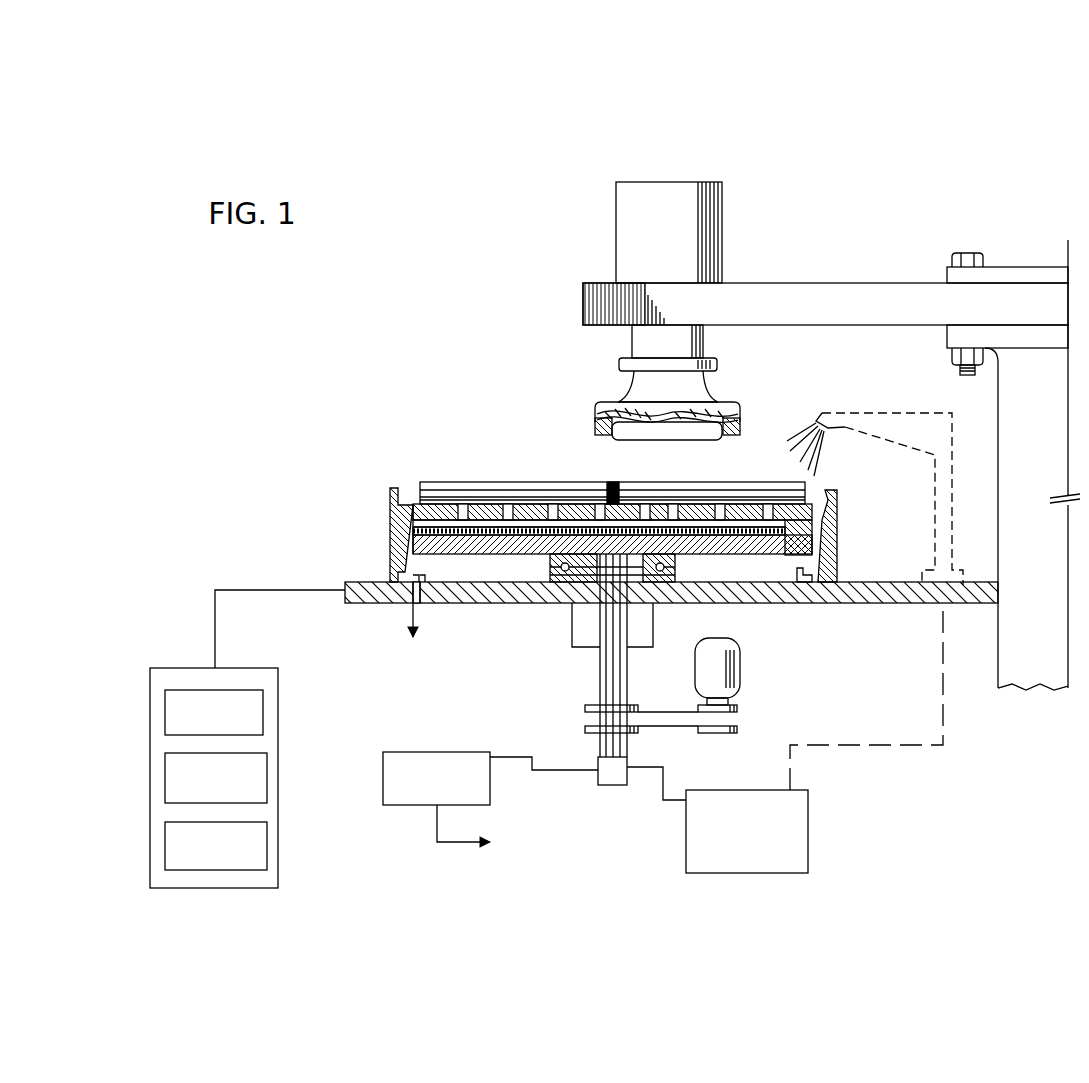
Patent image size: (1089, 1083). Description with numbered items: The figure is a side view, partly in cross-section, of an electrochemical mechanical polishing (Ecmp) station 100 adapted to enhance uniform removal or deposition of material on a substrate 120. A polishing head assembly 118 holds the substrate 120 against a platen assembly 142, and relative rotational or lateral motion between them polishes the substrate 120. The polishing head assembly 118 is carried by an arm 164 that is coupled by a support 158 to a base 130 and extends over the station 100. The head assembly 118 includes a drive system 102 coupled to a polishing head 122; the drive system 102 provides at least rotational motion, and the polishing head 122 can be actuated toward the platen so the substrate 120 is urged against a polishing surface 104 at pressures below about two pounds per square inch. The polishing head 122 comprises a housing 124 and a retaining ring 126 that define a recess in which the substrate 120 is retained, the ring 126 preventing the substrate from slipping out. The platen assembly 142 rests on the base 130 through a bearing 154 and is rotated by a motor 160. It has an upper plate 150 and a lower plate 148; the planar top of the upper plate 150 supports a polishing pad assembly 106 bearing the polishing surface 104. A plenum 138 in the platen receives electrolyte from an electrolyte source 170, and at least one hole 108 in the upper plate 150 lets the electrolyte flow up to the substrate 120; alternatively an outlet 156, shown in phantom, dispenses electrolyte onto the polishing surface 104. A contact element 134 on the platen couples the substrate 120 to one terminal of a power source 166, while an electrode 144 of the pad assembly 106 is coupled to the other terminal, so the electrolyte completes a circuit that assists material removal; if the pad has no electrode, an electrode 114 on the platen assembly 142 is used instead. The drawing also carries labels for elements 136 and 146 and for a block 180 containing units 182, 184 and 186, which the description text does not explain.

The Ecmp station 100 is at (410, 301).
The drive system 102 is at (616, 232).
The polishing surface 104 is at (490, 482).
The polishing pad assembly 106 is at (575, 479).
The hole 108 is at (455, 504).
The electrode 114 is at (437, 527).
The polishing head assembly 118 is at (598, 338).
The substrate 120 is at (631, 427).
The polishing head 122 is at (731, 402).
The housing 124 is at (742, 412).
The retaining ring 126 is at (738, 430).
The base 130 is at (905, 606).
The contact element 134 is at (619, 497).
The platen top plate 136 is at (432, 504).
The plenum 138 is at (777, 508).
The platen assembly 142 is at (829, 514).
The electrode 144 is at (655, 503).
The electrode 146 is at (422, 523).
The lower plate 148 is at (417, 543).
The upper plate 150 is at (422, 583).
The bearing 154 is at (680, 567).
The outlet 156 is at (870, 413).
The support 158 is at (998, 505).
The motor 160 is at (742, 662).
The arm 164 is at (795, 283).
The power source 166 is at (475, 752).
The electrolyte source 170 is at (808, 806).
The controller 180 is at (238, 668).
The CPU 182 is at (263, 712).
The memory 184 is at (267, 780).
The support circuits 186 is at (267, 848).